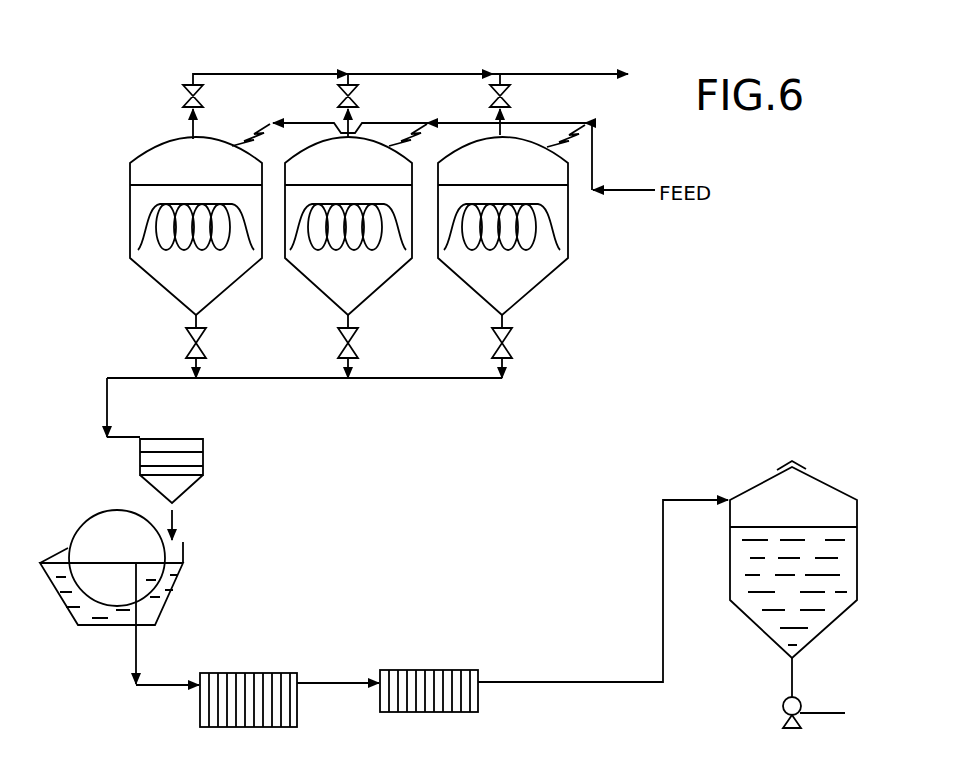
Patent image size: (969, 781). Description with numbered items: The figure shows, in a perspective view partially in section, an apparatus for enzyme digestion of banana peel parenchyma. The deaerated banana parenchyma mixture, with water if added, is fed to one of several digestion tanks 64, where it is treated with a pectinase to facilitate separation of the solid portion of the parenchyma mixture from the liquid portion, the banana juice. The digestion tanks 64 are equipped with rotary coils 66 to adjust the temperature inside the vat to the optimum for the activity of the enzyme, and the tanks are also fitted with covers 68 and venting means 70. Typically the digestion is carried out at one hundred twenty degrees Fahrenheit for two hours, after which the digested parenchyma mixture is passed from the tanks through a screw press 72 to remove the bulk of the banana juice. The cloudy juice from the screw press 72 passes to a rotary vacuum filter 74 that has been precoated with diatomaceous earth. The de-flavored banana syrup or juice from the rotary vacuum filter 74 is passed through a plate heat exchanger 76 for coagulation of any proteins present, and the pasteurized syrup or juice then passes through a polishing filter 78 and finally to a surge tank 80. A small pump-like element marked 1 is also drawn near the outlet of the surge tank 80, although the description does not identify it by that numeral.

The digestion tanks 64 is at (228, 304).
The rotary coils 66 is at (138, 251).
The covers 68 is at (212, 140).
The venting means 70 is at (190, 139).
The screw press 72 is at (195, 436).
The rotary vacuum filter 74 is at (192, 562).
The plate heat exchanger 76 is at (302, 670).
The polishing filter 78 is at (484, 697).
The surge tank 80 is at (842, 490).
The pump 1 is at (808, 693).